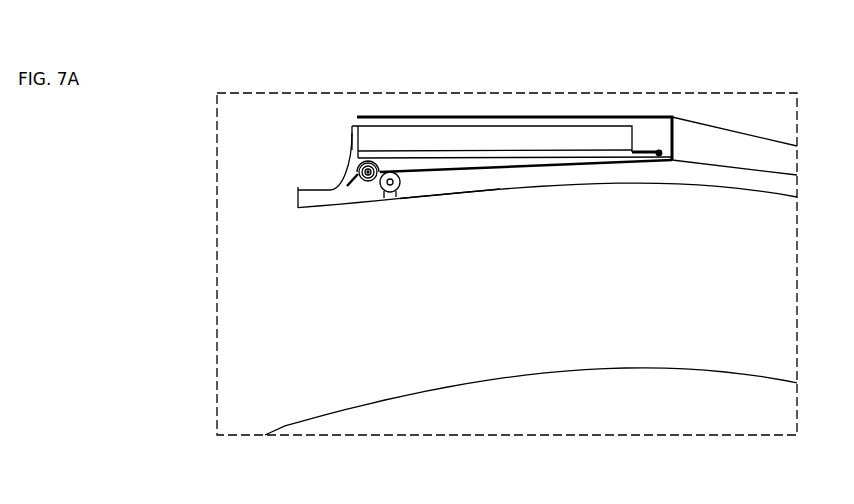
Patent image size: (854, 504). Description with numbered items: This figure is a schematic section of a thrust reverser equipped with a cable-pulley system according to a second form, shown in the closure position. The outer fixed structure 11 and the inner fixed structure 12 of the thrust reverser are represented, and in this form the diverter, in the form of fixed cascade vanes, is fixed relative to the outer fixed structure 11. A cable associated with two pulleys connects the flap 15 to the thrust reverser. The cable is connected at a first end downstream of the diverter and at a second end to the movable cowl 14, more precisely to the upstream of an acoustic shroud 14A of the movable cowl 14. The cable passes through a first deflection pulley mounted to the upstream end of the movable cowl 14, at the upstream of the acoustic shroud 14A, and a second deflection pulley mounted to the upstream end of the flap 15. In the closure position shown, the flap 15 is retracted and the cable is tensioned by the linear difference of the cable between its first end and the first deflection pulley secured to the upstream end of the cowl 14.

The outer fixed structure 11 is at (308, 173).
The inner fixed structure 12 is at (620, 400).
The movable cowl 14 is at (722, 108).
The acoustic shroud 14A is at (510, 167).
The flap 15 is at (448, 196).